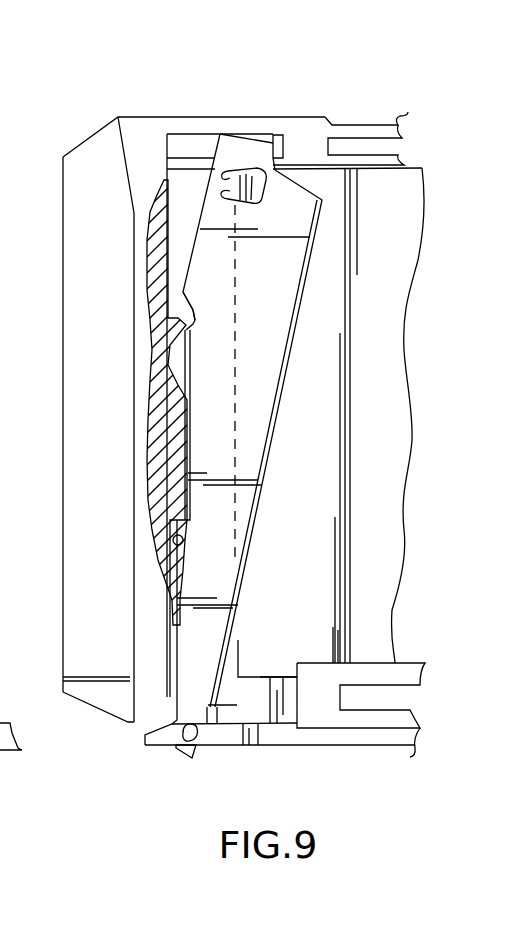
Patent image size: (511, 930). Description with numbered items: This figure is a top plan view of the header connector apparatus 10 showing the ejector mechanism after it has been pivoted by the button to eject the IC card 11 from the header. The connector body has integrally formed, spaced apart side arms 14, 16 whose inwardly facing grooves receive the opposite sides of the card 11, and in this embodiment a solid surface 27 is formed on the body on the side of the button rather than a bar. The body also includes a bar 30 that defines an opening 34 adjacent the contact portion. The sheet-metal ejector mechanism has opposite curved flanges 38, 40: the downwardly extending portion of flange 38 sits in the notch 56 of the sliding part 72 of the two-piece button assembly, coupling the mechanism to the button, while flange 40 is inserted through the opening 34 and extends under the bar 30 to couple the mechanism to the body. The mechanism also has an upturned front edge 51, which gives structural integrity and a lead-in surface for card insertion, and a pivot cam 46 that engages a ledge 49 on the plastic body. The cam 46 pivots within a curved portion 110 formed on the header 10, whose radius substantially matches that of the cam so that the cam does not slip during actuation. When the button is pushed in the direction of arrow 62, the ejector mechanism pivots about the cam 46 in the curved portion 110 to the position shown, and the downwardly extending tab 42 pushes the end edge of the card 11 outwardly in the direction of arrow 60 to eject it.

The header connector apparatus 10 is at (362, 72).
The IC card 11 is at (398, 300).
The side arm 14 is at (410, 668).
The side arm 16 is at (408, 112).
The solid surface 27 is at (157, 705).
The bar 30 is at (190, 118).
The opening 34 is at (190, 148).
The curved flange 38 is at (196, 762).
The curved flange 40 is at (270, 136).
The downwardly extending tab 42 is at (233, 172).
The pivot cam 46 is at (167, 382).
The ledge 49 is at (173, 542).
The upturned front edge 51 is at (300, 322).
The notch 56 is at (187, 740).
The arrow 60 is at (383, 414).
The arrow 62 is at (242, 767).
The sliding part 72 is at (411, 760).
The curved portion 110 is at (170, 342).